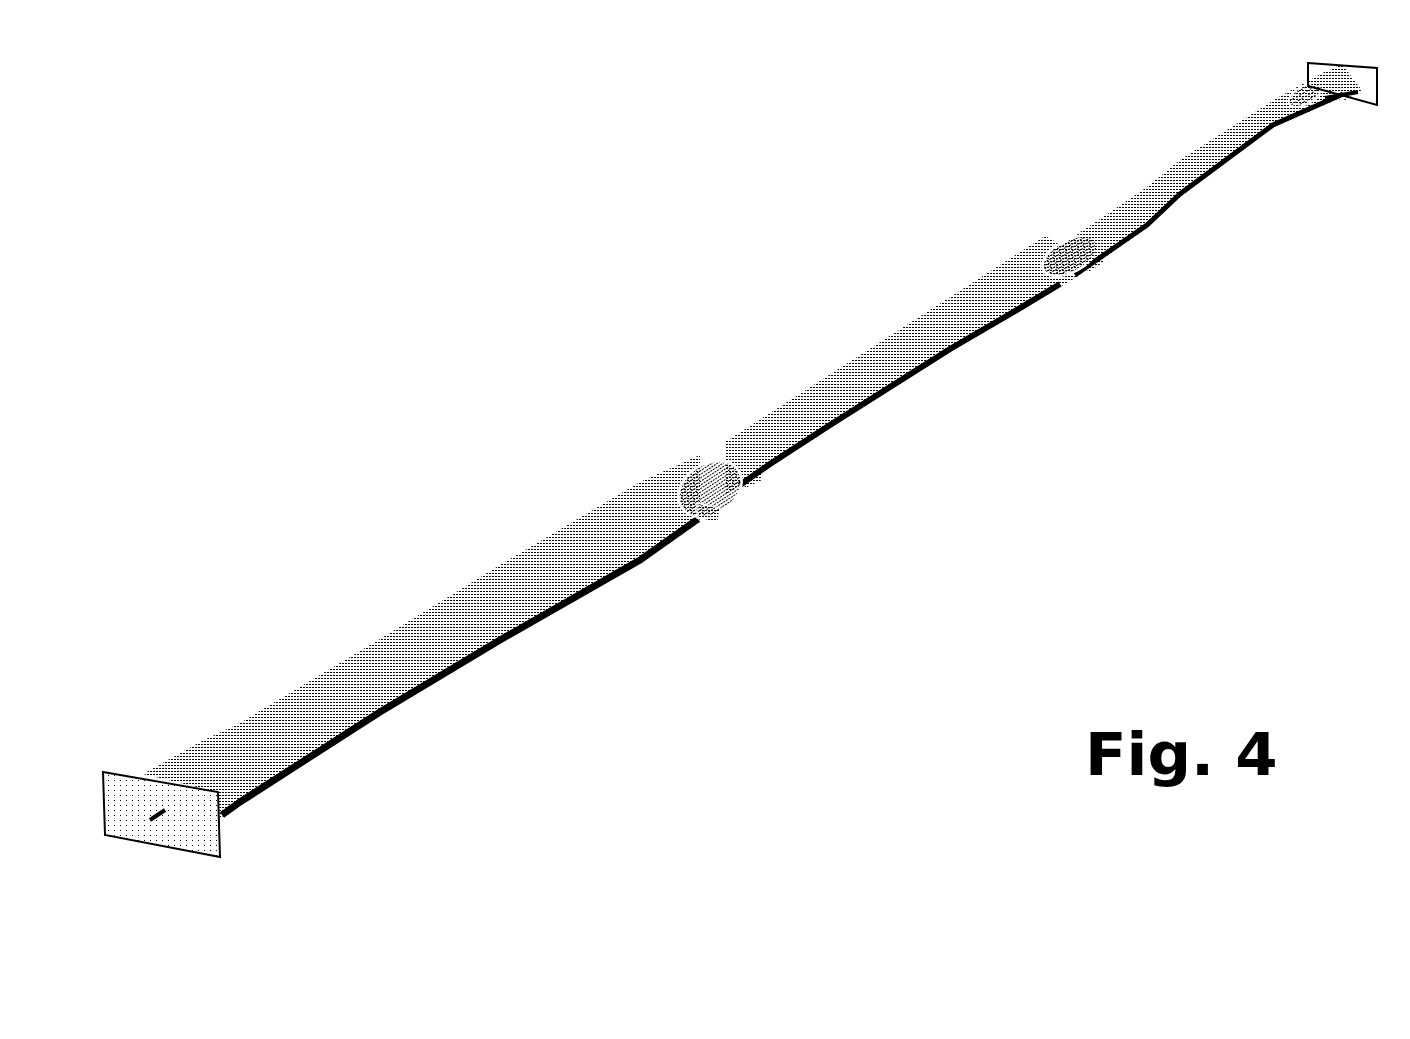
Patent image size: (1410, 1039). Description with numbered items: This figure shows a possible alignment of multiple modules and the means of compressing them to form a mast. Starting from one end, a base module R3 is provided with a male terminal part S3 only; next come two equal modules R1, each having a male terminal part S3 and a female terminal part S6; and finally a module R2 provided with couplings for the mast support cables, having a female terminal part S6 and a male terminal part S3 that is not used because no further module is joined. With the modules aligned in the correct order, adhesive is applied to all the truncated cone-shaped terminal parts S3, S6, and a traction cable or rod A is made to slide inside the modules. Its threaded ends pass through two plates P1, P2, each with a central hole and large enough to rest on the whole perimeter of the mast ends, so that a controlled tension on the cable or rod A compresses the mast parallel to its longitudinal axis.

The equal module R1 is at (1035, 282).
The module provided with couplings for the mast support cables R2 is at (421, 636).
The base module R3 is at (1307, 87).
The male terminal part S3 is at (1042, 276).
The female terminal part S6 is at (996, 303).
The plate P1 is at (188, 841).
The plate P2 is at (1346, 62).
The traction cable or rod A is at (152, 819).